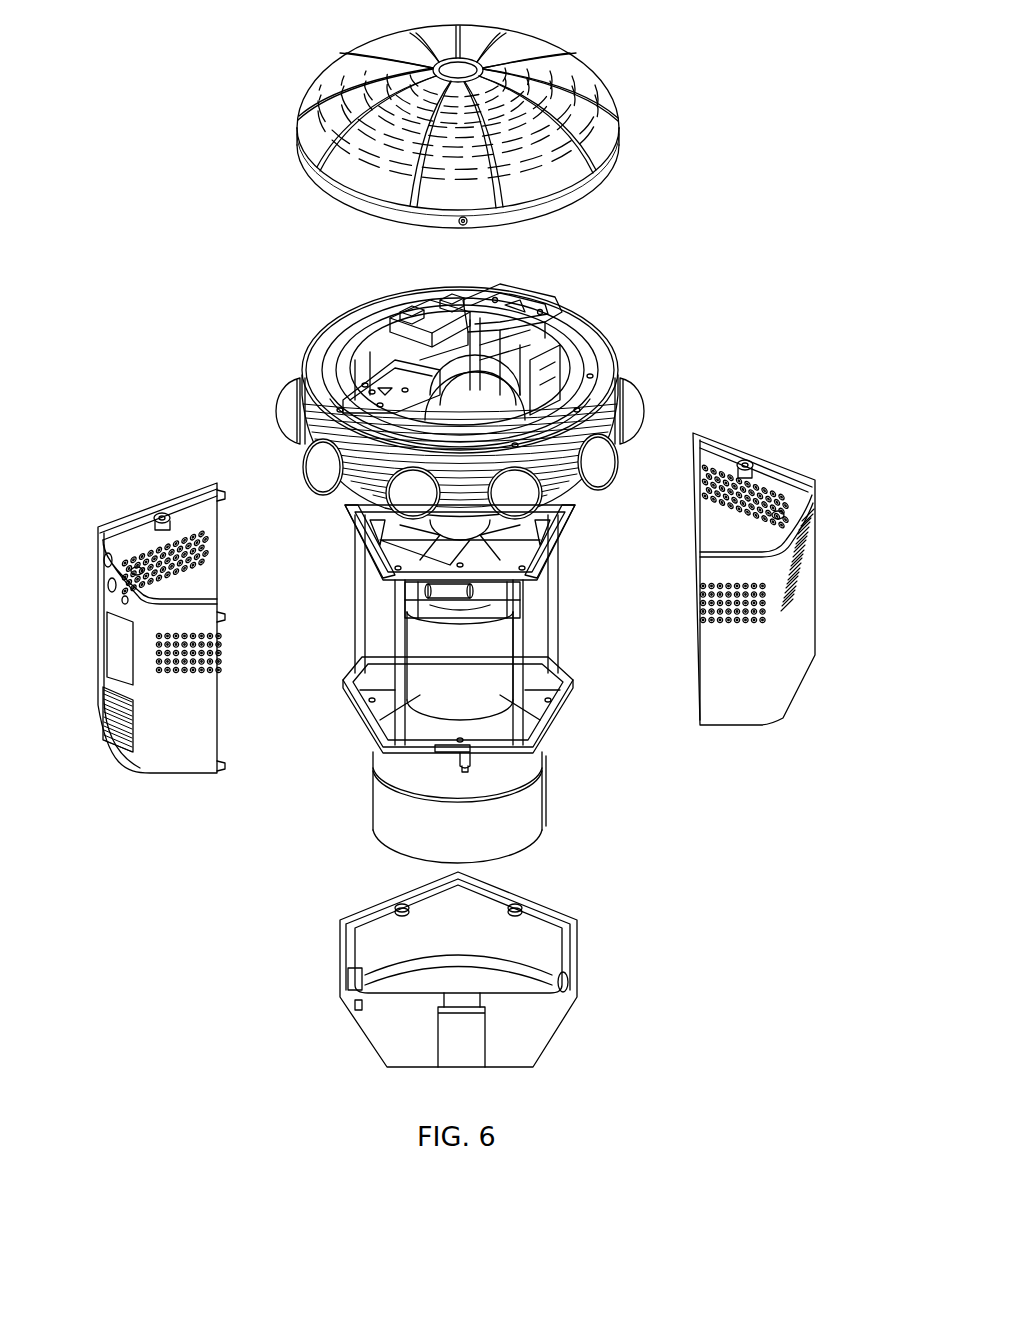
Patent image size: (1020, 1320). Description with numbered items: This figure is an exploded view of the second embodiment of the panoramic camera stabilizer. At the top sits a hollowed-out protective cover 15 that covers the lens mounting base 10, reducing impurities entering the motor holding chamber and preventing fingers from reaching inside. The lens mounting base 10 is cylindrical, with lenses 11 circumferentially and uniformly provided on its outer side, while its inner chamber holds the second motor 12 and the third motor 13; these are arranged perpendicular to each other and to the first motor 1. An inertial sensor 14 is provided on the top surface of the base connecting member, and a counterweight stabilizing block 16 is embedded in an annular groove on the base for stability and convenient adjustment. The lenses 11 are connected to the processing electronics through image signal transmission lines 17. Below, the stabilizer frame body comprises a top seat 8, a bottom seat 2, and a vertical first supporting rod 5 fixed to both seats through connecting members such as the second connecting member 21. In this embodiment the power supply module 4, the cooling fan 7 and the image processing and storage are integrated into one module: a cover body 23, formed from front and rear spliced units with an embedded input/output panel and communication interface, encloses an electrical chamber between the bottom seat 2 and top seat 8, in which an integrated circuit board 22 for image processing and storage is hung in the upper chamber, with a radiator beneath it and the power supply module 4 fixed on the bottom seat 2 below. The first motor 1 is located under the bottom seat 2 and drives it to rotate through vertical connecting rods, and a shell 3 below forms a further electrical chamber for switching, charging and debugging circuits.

The first motor 1 is at (527, 817).
The bottom seat 2 is at (440, 752).
The shell 3 is at (558, 1008).
The power supply module 4 is at (423, 680).
The first supporting rod 5 is at (548, 715).
The cooling fan 7 is at (480, 605).
The top seat 8 is at (380, 563).
The lens mounting base 10 is at (347, 497).
The lens 11 is at (323, 470).
The second motor 12 is at (555, 383).
The third motor 13 is at (355, 335).
The inertial sensor 14 is at (495, 300).
The protective cover 15 is at (610, 100).
The counterweight stabilizing block 16 is at (592, 382).
The image signal transmission line 17 is at (560, 520).
The second connecting member 21 is at (352, 345).
The integrated circuit board 22 is at (445, 588).
The cover body 23 is at (120, 690).